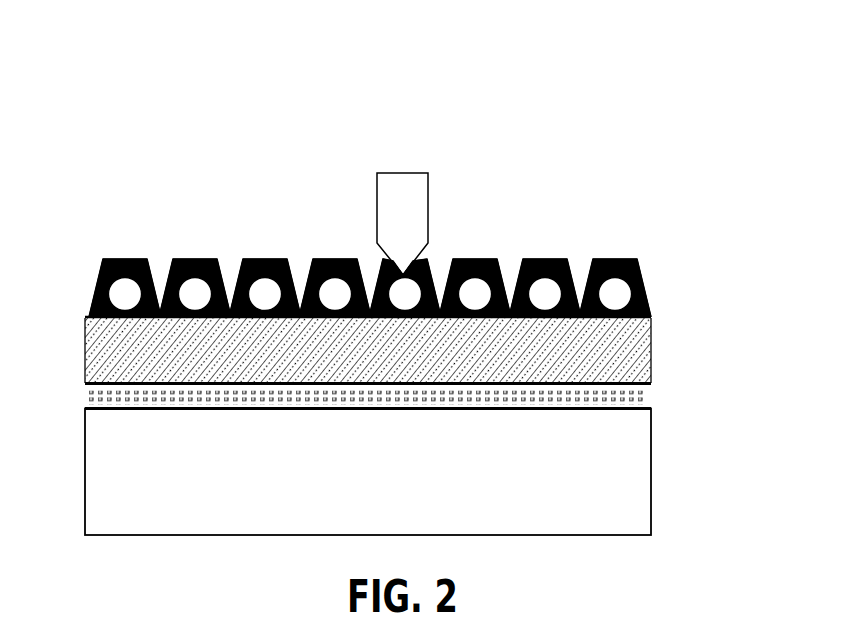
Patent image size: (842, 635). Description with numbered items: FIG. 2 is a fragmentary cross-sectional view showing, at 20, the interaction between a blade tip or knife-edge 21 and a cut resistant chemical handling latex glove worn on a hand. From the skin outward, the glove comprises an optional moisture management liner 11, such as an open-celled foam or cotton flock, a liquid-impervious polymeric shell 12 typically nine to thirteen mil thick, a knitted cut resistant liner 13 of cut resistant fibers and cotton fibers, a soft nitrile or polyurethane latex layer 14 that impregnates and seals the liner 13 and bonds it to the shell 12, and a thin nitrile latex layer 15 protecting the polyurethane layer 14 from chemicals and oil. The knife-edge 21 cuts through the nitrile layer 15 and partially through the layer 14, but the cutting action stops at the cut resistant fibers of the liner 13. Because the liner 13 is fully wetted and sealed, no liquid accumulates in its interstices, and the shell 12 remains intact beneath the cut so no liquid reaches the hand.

The interaction between blade tip and glove 20 is at (506, 119).
The blade tip/knife-edge 21 is at (402, 224).
The nitrile latex layer 15 is at (640, 259).
The soft nitrile or polyurethane latex layer 14 is at (641, 270).
The knitted cut resistant liner 13 is at (626, 297).
The liquid-impervious polymeric shell 12 is at (625, 353).
The moisture management liner 11 is at (642, 392).